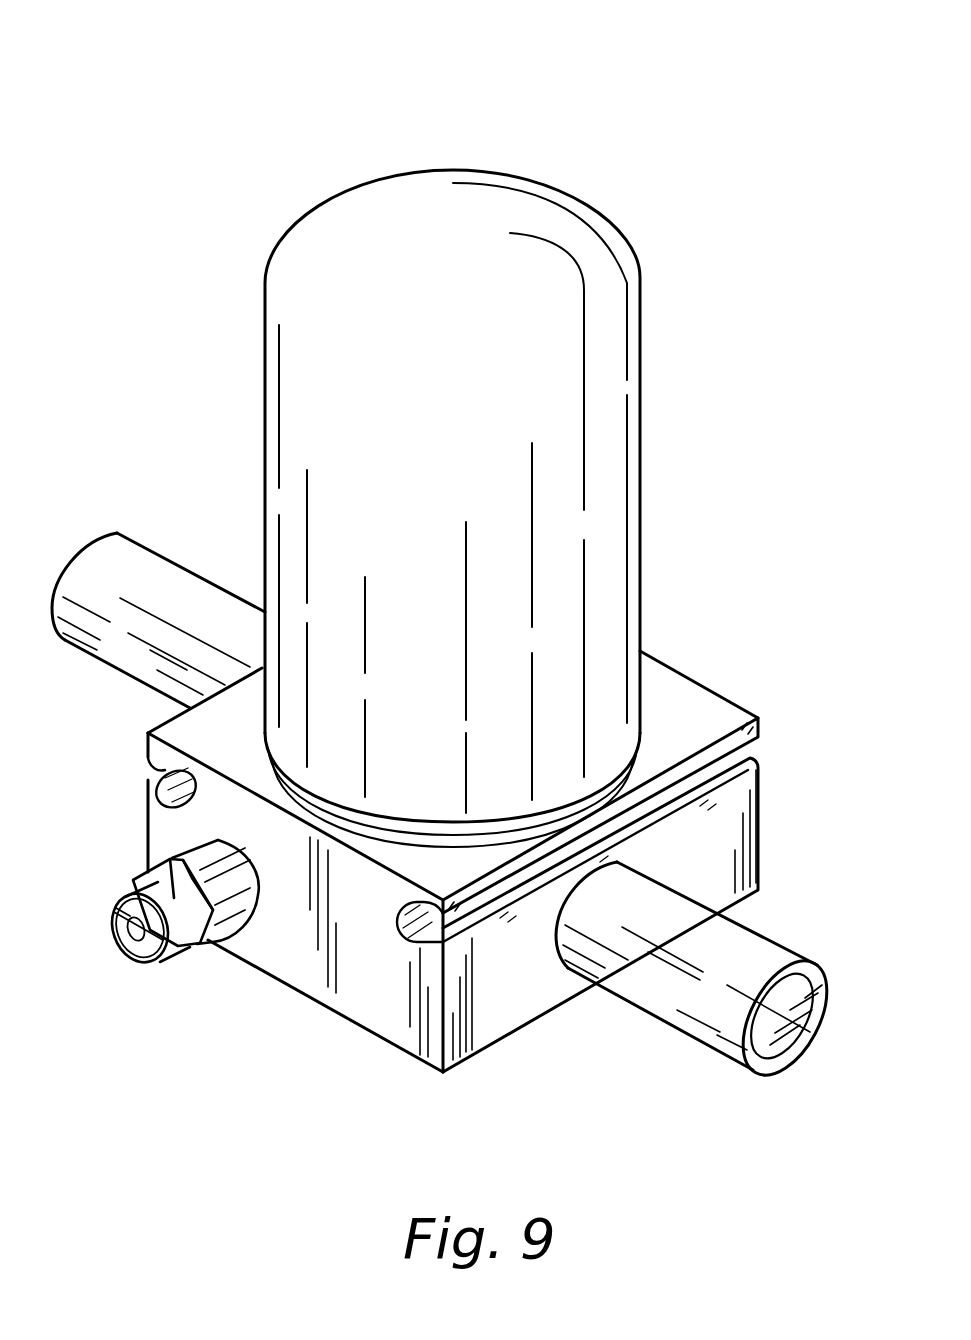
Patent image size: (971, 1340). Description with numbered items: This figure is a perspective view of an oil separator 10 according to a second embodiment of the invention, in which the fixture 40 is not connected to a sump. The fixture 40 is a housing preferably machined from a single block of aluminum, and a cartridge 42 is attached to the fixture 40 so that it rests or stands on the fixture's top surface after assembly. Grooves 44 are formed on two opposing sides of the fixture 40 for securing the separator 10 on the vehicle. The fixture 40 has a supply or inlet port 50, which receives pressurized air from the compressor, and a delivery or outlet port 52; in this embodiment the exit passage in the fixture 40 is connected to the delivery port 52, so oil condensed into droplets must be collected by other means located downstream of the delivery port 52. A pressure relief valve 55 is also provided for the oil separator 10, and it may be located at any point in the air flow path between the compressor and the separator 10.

The oil separator 10 is at (150, 125).
The fixture 40 is at (760, 828).
The cartridge 42 is at (638, 358).
The grooves 44 is at (150, 810).
The inlet port 50 is at (130, 680).
The delivery port 52 is at (707, 1015).
The pressure relief valve 55 is at (130, 946).